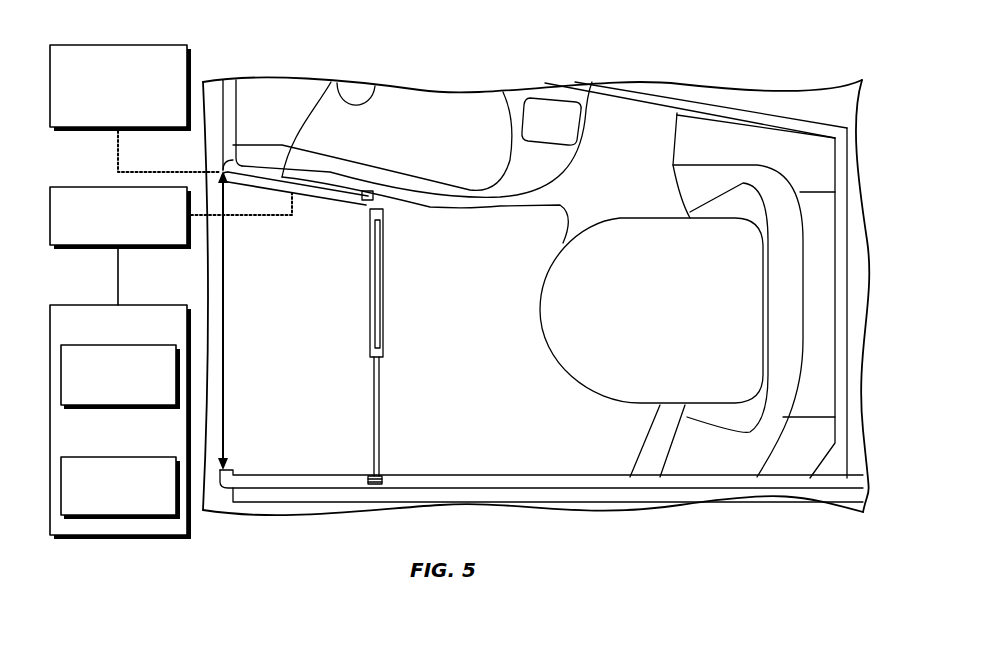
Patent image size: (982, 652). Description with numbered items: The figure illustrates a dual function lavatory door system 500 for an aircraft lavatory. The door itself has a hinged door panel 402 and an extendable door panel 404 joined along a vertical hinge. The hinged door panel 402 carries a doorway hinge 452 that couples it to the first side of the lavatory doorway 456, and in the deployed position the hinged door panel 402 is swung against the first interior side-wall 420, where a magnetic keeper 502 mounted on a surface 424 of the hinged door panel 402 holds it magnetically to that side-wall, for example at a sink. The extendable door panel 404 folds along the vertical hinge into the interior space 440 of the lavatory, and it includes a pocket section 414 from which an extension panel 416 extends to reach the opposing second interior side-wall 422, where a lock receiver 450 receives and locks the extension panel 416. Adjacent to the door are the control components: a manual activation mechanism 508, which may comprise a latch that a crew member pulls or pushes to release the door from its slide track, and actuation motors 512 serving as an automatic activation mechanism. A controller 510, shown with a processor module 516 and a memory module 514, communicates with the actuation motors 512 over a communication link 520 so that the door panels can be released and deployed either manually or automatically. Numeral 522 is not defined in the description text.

The dual function lavatory door system 500 is at (786, 65).
The hinged door panel 402 is at (320, 195).
The extendable door panel 404 is at (381, 214).
The pocket section 414 is at (378, 283).
The extension panel 416 is at (378, 377).
The first interior side-wall 420 is at (430, 200).
The second interior side-wall 422 is at (408, 480).
The surface 424 is at (331, 82).
The interior space 440 is at (493, 361).
The lock receiver 450 is at (373, 488).
The doorway hinge 452 is at (228, 170).
The lavatory doorway 456 is at (225, 333).
The magnetic keeper 502 is at (368, 190).
The manual activation mechanism 508 is at (63, 45).
The controller 510 is at (63, 305).
The actuation motors 512 is at (63, 187).
The memory module 514 is at (96, 457).
The processor module 516 is at (140, 406).
The communication link 520 is at (120, 290).
The window panel 522 is at (440, 110).